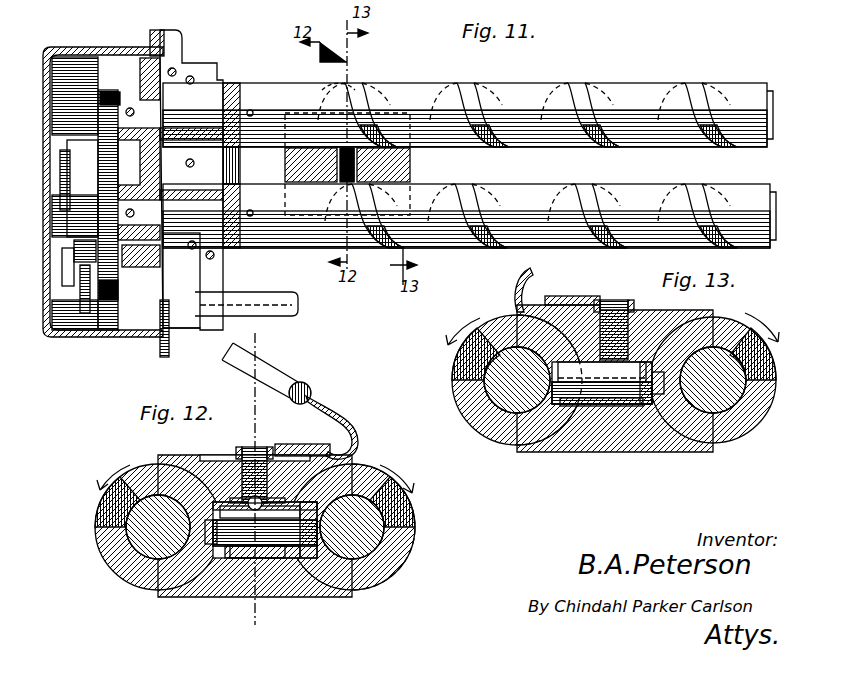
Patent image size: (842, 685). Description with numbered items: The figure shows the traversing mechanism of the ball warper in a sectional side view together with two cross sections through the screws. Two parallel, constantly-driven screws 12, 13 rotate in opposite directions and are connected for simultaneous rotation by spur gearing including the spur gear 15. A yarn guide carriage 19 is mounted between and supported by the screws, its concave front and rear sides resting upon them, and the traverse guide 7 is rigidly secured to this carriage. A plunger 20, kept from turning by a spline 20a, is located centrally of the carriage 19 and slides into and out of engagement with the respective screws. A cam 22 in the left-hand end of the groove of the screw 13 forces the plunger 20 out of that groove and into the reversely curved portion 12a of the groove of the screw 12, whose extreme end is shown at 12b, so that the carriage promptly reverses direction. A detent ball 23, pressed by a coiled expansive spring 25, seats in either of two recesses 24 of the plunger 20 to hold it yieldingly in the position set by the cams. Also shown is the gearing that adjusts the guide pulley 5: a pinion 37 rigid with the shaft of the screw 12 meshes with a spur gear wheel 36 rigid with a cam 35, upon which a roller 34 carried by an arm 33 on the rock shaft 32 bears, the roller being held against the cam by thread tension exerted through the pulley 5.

In FIG. 12, the guide pulley 5 is at (262, 608).
In FIG. 12, the traverse guide 7 is at (268, 384).
In FIG. 11, the screw 12 is at (736, 86).
In FIG. 12, the screw 12 is at (372, 456).
In FIG. 13, the screw 12 is at (458, 382).
In FIG. 11, the reversely curved portion of groove 12a is at (300, 130).
In FIG. 12, the reversely curved portion of groove 12a is at (322, 560).
In FIG. 13, the reversely curved portion of groove 12a is at (560, 404).
In FIG. 11, the extreme end of groove 12b is at (356, 138).
In FIG. 11, the screw 13 is at (768, 182).
In FIG. 12, the screw 13 is at (96, 530).
In FIG. 13, the screw 13 is at (776, 378).
In FIG. 11, the spur gear 15 is at (150, 300).
In FIG. 11, the yarn guide carriage 19 is at (408, 165).
In FIG. 12, the yarn guide carriage 19 is at (300, 578).
In FIG. 13, the yarn guide carriage 19 is at (622, 452).
In FIG. 11, the plunger 20 is at (340, 178).
In FIG. 12, the plunger 20 is at (288, 588).
In FIG. 13, the plunger 20 is at (560, 402).
In FIG. 12, the spline 20a is at (263, 578).
In FIG. 13, the spline 20a is at (601, 418).
In FIG. 11, the cam 22 is at (350, 188).
In FIG. 12, the cam 22 is at (206, 560).
In FIG. 13, the cam 22 is at (666, 402).
In FIG. 12, the ball 23 is at (262, 498).
In FIG. 12, the recesses 24 is at (246, 560).
In FIG. 12, the coiled expansive spring 25 is at (236, 462).
In FIG. 11, the rock shaft 32 is at (281, 300).
In FIG. 11, the arm 33 is at (82, 310).
In FIG. 11, the roller 34 is at (72, 268).
In FIG. 11, the cam 35 is at (75, 158).
In FIG. 11, the spur gear wheel 36 is at (110, 300).
In FIG. 11, the pinion 37 is at (101, 97).